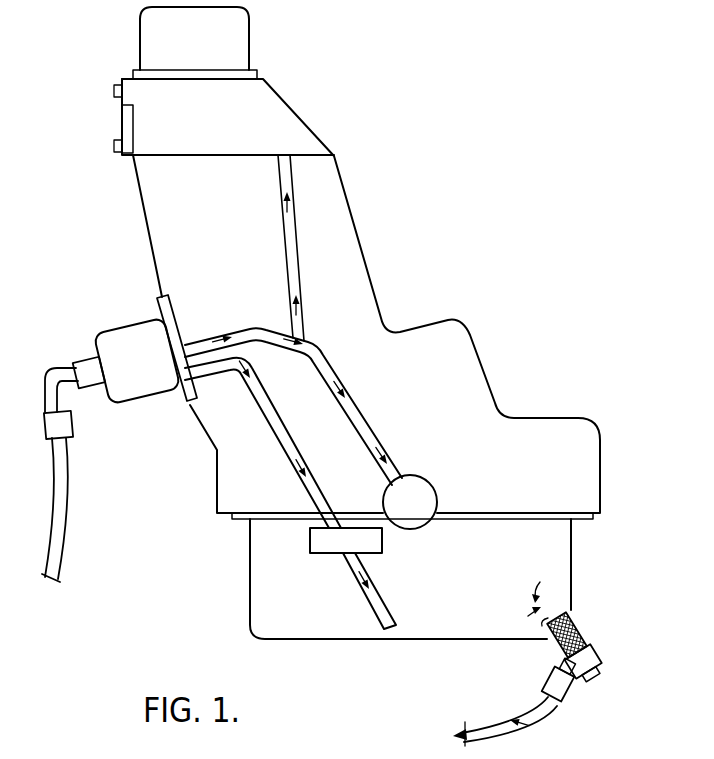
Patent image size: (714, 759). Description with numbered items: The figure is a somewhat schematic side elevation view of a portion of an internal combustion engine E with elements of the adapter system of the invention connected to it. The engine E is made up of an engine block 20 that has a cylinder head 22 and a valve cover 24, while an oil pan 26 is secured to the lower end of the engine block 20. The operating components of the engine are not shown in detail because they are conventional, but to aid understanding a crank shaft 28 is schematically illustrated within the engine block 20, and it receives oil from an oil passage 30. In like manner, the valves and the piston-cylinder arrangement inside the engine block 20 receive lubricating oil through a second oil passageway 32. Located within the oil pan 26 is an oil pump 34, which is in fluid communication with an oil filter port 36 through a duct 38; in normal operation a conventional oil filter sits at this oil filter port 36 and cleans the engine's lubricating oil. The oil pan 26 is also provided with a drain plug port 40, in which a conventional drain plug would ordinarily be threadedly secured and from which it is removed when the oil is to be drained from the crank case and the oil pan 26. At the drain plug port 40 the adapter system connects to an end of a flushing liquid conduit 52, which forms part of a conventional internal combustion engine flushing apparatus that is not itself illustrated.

The internal combustion engine E is at (397, 190).
The engine block 20 is at (355, 273).
The cylinder head 22 is at (122, 120).
The valve cover 24 is at (252, 40).
The oil pan 26 is at (560, 547).
The crank shaft 28 is at (432, 483).
The oil passage 30 is at (367, 420).
The second oil passageway 32 is at (285, 252).
The oil pump 34 is at (383, 540).
The oil filter port 36 is at (160, 298).
The duct 38 is at (262, 413).
The drain plug port 40 is at (551, 611).
The flushing liquid conduit 52 is at (546, 707).